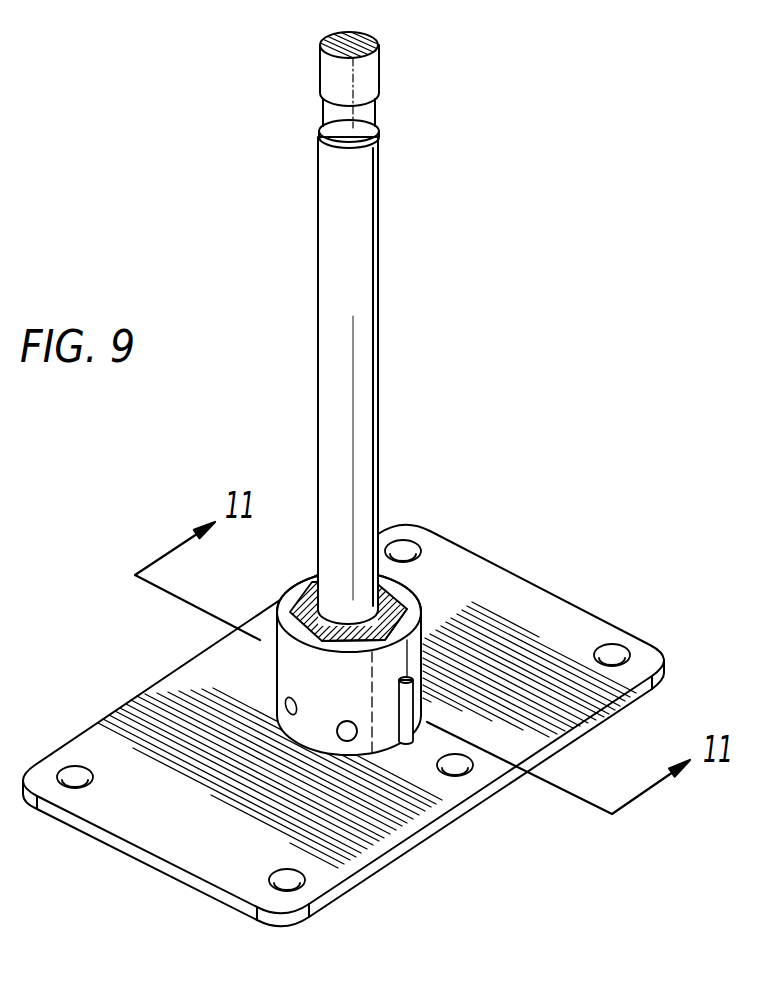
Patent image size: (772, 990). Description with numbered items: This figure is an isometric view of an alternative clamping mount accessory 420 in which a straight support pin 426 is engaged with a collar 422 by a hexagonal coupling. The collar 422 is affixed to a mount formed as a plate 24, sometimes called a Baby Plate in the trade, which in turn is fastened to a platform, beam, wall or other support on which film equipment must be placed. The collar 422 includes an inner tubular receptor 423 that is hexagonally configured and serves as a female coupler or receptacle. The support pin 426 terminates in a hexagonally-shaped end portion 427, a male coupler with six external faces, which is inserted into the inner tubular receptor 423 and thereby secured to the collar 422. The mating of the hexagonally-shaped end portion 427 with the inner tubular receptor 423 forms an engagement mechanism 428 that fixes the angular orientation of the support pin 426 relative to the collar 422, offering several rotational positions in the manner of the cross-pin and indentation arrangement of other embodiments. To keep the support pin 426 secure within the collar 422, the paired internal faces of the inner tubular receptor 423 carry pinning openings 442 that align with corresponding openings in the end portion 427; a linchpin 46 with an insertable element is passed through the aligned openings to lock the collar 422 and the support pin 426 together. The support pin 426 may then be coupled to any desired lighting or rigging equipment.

The clamping mount accessory 420 is at (540, 286).
The support pin 426 is at (360, 213).
The collar 422 is at (417, 636).
The plate 24 is at (560, 615).
The hexagonally-shaped end portion 427 is at (303, 603).
The inner tubular receptor 423 is at (323, 620).
The engagement mechanism 428 is at (336, 652).
The pinning openings 442 is at (348, 742).
The linchpin 46 is at (413, 723).